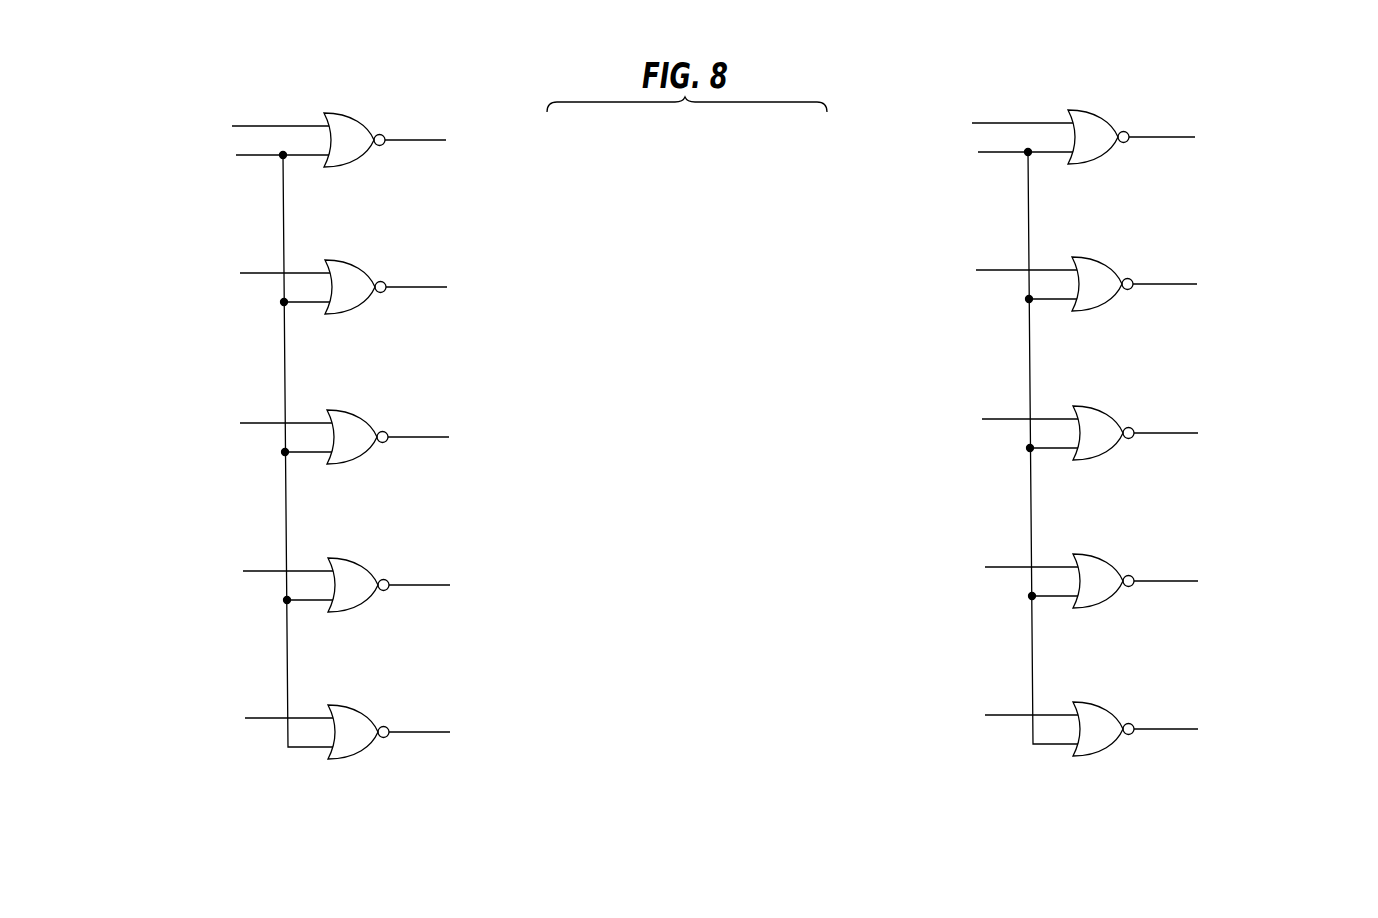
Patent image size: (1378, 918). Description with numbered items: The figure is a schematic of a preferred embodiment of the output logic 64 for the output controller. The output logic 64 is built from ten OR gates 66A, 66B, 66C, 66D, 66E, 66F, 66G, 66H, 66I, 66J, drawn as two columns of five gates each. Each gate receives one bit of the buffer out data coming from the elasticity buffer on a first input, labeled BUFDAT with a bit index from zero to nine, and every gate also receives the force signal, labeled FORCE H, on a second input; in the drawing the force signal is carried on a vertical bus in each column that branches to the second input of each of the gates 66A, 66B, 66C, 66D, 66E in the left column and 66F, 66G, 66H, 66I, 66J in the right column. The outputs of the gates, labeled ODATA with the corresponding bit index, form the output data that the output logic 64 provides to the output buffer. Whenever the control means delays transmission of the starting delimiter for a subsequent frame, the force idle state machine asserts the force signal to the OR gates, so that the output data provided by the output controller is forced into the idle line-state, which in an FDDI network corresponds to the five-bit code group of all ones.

The output logic 64 is at (238, 48).
The OR gate 66A is at (341, 152).
The OR gate 66B is at (342, 299).
The OR gate 66C is at (344, 449).
The OR gate 66D is at (345, 597).
The OR gate 66E is at (345, 744).
The OR gate 66F is at (1085, 149).
The OR gate 66G is at (1089, 296).
The OR gate 66H is at (1090, 445).
The OR gate 66I is at (1090, 593).
The OR gate 66J is at (1090, 741).